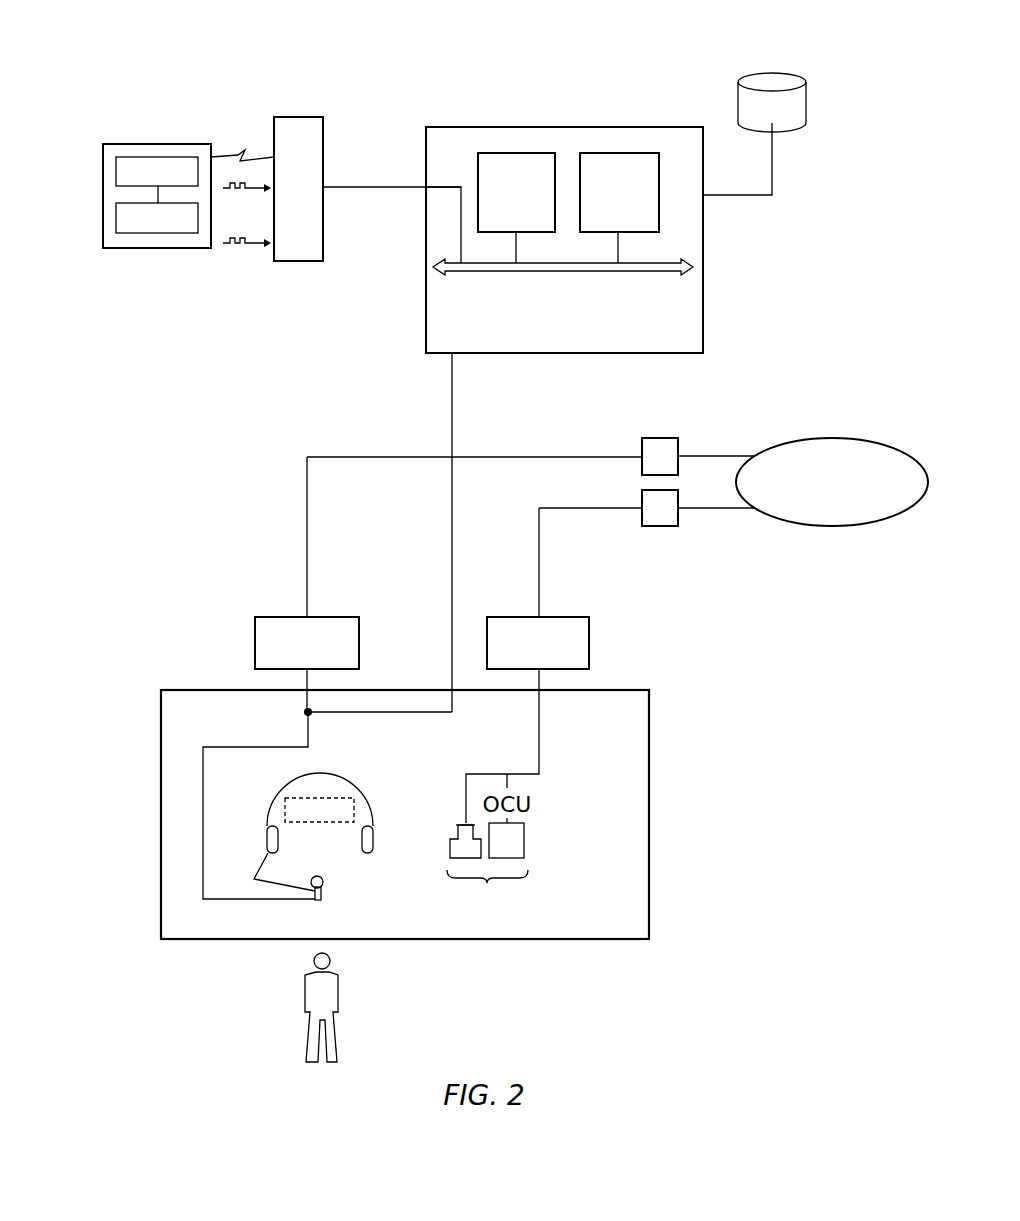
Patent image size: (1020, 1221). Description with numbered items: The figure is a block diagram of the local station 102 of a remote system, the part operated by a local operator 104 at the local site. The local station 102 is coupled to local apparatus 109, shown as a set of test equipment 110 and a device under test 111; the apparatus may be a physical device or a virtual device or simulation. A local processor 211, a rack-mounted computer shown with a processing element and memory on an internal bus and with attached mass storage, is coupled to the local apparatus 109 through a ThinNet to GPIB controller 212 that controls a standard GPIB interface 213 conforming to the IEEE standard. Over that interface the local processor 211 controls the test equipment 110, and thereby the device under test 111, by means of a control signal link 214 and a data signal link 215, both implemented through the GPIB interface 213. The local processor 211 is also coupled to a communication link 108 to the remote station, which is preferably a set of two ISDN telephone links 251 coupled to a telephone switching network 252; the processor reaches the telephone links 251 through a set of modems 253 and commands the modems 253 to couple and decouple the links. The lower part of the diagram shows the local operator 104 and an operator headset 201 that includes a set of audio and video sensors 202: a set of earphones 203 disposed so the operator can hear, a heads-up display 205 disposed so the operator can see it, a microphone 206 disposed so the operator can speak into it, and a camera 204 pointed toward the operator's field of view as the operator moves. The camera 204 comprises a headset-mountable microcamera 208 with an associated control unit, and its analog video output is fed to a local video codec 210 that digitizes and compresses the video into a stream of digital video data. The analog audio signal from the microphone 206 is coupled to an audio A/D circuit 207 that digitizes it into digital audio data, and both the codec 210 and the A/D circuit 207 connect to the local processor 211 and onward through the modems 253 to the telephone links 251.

The local station 102 is at (94, 78).
The local apparatus 109 is at (158, 248).
The test equipment 110 is at (116, 217).
The device under test 111 is at (116, 173).
The ThinNet to GPIB controller 212 is at (297, 117).
The GPIB interface 213 is at (260, 158).
The control signal link 214 is at (242, 193).
The data signal link 215 is at (242, 248).
The local processor 211 is at (703, 313).
The communication link 108 is at (712, 607).
The modems 253 is at (656, 438).
The ISDN telephone links 251 is at (705, 456).
The telephone switching network 252 is at (830, 440).
The audio A/D circuit 207 is at (282, 617).
The local video codec 210 is at (516, 617).
The audio and video sensors 202 is at (650, 848).
The operator headset 201 is at (368, 800).
The heads-up display 205 is at (323, 798).
The earphones 203 is at (278, 840).
The microphone 206 is at (323, 882).
The camera 204 is at (486, 869).
The microcamera 208 is at (447, 853).
The local operator 104 is at (338, 1003).